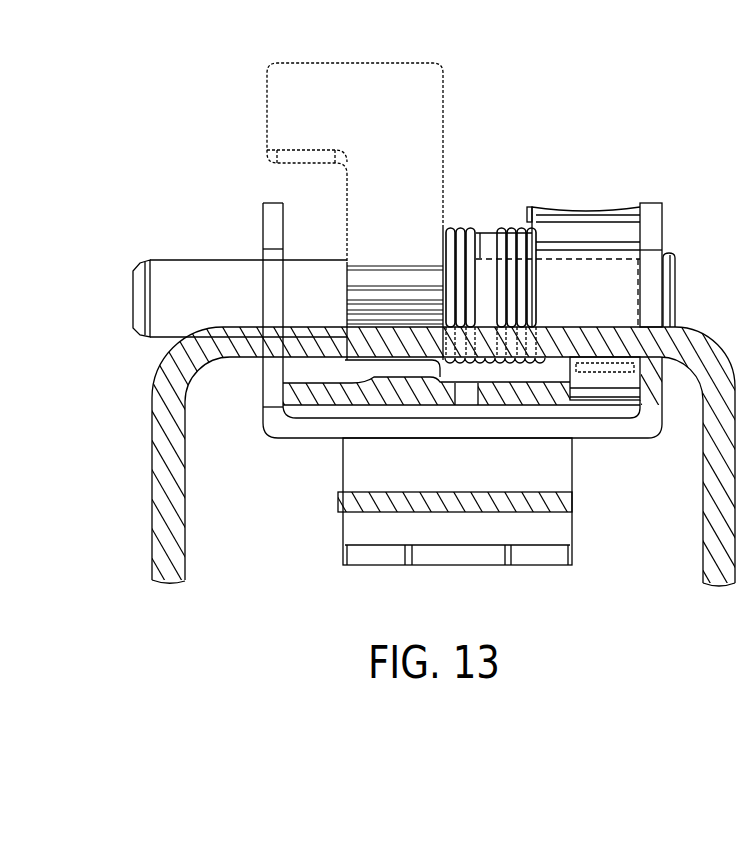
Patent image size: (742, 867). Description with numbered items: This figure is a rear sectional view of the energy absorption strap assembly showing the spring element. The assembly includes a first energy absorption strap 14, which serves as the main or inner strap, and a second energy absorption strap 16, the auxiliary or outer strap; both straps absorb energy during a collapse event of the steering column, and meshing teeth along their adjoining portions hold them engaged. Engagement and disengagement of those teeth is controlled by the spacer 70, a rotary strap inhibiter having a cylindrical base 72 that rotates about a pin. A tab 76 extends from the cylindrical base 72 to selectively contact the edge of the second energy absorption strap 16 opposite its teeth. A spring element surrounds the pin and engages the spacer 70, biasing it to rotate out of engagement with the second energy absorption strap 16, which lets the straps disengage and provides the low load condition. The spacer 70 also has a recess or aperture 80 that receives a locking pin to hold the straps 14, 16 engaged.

The first energy absorption strap 14 is at (340, 393).
The second energy absorption strap 16 is at (545, 400).
The spacer 70 is at (641, 191).
The cylindrical base 72 is at (588, 270).
The tab 76 is at (612, 392).
The recess or aperture 80 is at (514, 228).